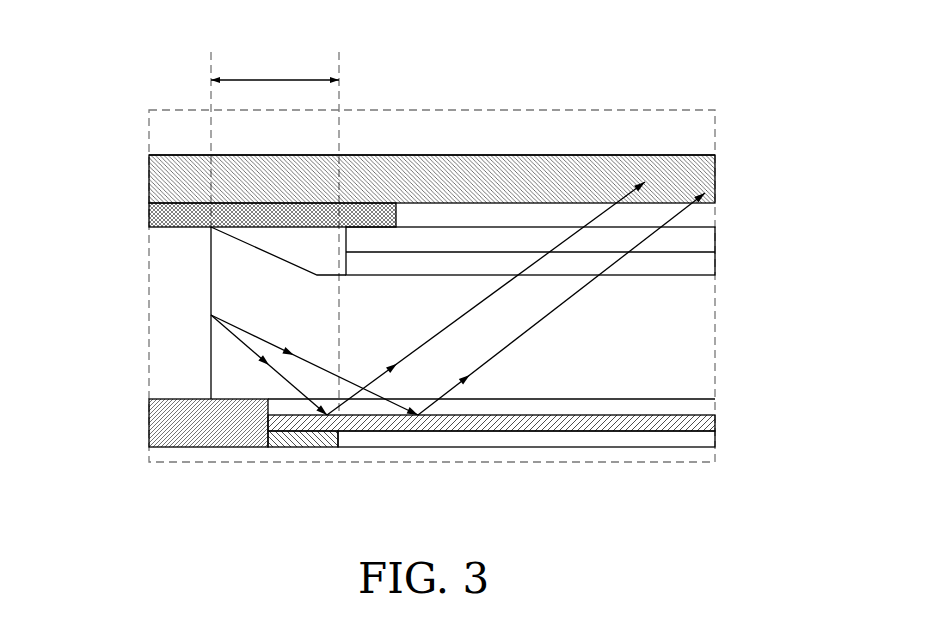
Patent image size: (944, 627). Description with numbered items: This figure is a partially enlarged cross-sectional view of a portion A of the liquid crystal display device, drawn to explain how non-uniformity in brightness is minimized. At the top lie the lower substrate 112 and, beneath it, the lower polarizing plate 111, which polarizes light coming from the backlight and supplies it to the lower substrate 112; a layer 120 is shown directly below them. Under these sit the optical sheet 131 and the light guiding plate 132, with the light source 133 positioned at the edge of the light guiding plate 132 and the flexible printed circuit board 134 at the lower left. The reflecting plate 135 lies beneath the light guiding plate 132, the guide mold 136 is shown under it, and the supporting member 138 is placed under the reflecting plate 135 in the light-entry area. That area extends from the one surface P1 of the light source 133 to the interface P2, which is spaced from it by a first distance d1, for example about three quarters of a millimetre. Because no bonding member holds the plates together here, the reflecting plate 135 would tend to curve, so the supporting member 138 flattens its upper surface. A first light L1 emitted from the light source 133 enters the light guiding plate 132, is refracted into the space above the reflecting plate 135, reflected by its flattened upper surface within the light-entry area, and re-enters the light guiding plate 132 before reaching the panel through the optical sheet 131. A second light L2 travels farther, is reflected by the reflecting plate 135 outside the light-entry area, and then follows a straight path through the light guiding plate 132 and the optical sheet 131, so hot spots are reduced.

The portion A is at (715, 110).
The one surface P1 is at (210, 130).
The interface P2 is at (338, 224).
The first distance d1 is at (275, 70).
The lower substrate 112 is at (181, 139).
The lower polarizing plate 111 is at (181, 178).
The light blocking layer 120 is at (181, 212).
The optical sheet 131 is at (702, 235).
The light guiding plate 132 is at (660, 340).
The light source 133 is at (183, 333).
The flexible printed circuit board 134 is at (183, 424).
The reflecting plate 135 is at (665, 425).
The guide mold 136 is at (665, 457).
The supporting member 138 is at (300, 448).
The first light L1 is at (440, 289).
The second light L2 is at (460, 304).